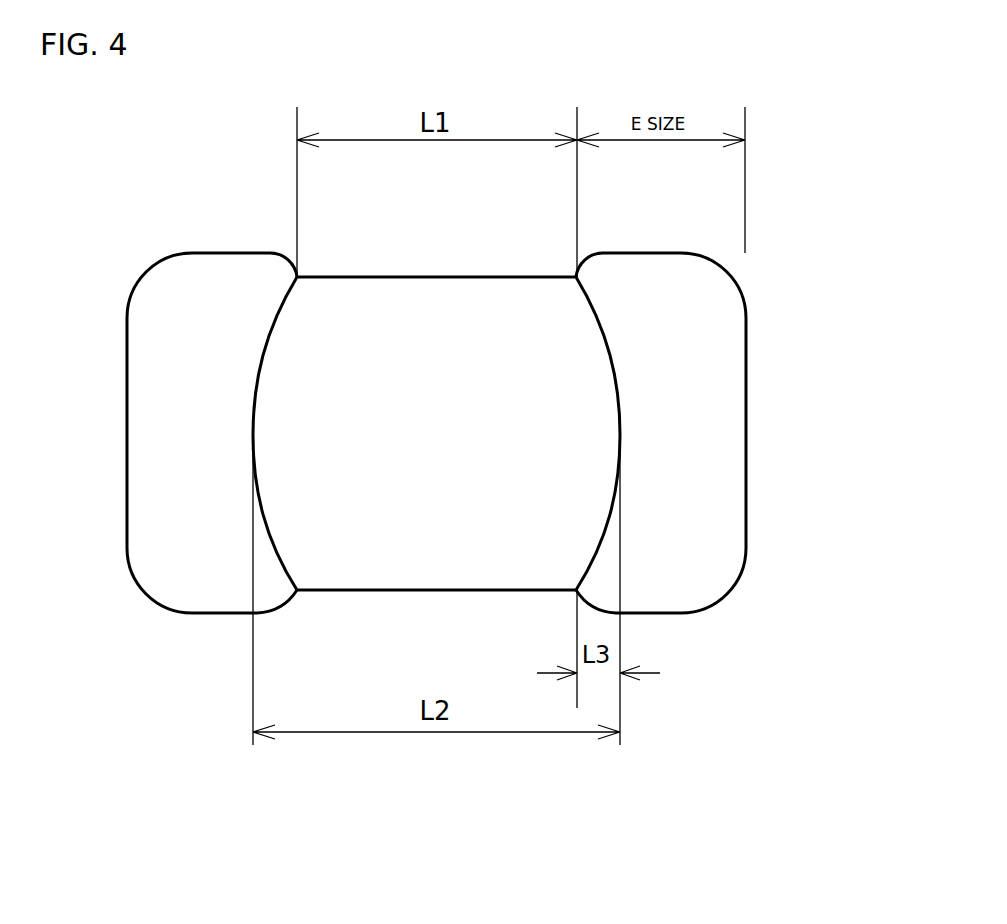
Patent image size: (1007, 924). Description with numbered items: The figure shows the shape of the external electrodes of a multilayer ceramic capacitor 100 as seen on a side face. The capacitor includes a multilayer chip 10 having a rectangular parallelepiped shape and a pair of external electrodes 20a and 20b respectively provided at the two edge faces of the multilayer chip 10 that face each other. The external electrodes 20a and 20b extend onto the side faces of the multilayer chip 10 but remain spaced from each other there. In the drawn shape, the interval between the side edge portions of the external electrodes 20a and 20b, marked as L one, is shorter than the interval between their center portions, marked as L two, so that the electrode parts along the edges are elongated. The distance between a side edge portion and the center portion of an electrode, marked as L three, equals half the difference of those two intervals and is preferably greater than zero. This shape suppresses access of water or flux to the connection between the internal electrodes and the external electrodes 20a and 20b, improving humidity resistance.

The multilayer ceramic capacitor 100 is at (775, 208).
The multilayer chip 10 is at (353, 560).
The external electrode 20a is at (157, 602).
The external electrode 20b is at (717, 602).